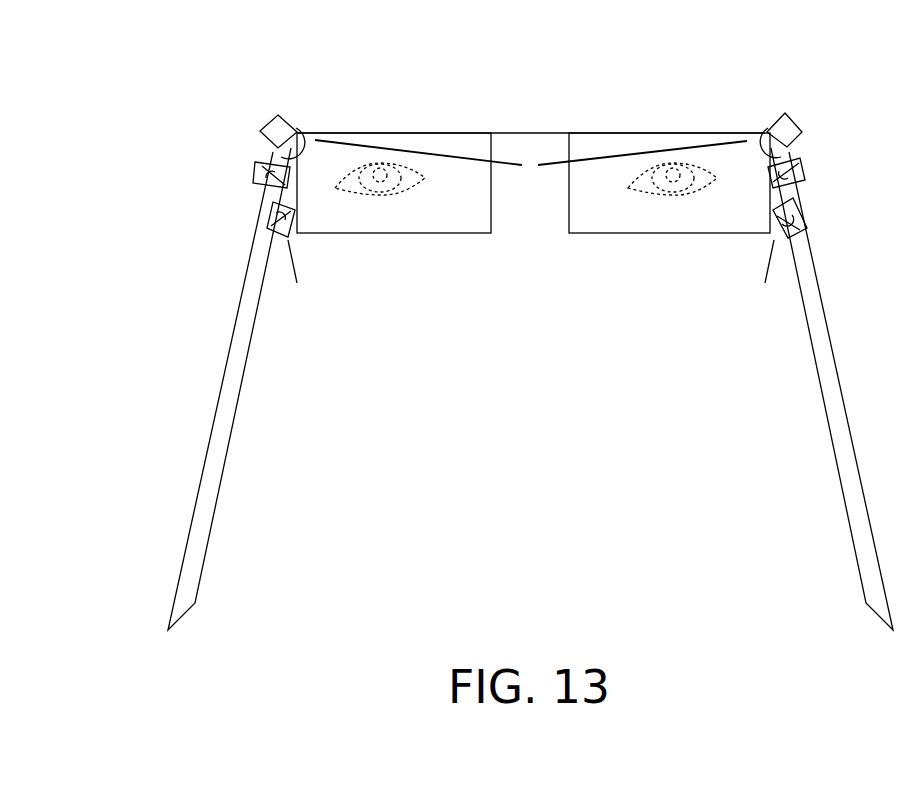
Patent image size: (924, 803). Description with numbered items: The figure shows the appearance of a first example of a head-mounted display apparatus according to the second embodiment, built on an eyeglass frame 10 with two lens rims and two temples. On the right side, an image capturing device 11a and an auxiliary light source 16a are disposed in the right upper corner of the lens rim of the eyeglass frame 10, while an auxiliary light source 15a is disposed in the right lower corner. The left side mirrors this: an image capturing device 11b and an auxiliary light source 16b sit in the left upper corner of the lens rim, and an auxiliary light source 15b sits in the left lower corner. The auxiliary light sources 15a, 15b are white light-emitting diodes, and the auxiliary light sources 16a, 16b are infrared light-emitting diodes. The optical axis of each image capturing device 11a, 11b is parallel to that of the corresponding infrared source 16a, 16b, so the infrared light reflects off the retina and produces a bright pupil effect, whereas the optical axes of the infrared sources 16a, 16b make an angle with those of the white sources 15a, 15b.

The eyeglass frame 10 is at (233, 382).
The image capturing device 11a is at (786, 118).
The image capturing device 11b is at (276, 120).
The auxiliary light source 15a is at (810, 210).
The auxiliary light source 15b is at (272, 217).
The auxiliary light source 16a is at (805, 177).
The auxiliary light source 16b is at (257, 178).